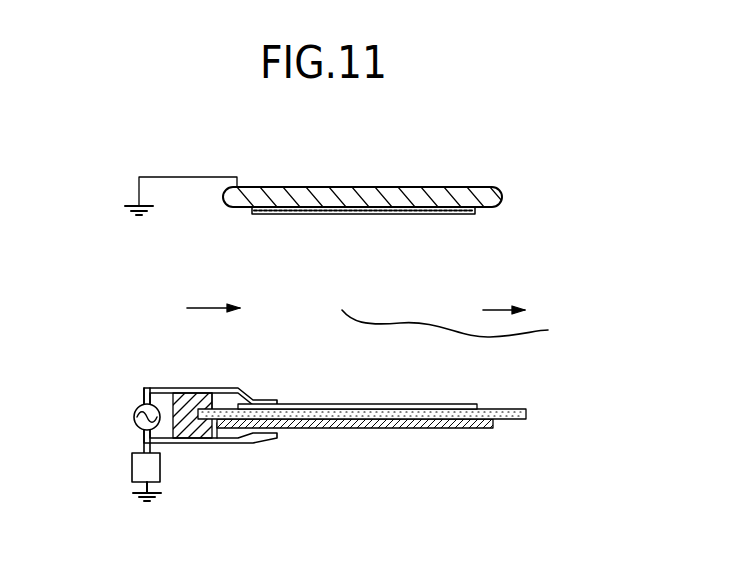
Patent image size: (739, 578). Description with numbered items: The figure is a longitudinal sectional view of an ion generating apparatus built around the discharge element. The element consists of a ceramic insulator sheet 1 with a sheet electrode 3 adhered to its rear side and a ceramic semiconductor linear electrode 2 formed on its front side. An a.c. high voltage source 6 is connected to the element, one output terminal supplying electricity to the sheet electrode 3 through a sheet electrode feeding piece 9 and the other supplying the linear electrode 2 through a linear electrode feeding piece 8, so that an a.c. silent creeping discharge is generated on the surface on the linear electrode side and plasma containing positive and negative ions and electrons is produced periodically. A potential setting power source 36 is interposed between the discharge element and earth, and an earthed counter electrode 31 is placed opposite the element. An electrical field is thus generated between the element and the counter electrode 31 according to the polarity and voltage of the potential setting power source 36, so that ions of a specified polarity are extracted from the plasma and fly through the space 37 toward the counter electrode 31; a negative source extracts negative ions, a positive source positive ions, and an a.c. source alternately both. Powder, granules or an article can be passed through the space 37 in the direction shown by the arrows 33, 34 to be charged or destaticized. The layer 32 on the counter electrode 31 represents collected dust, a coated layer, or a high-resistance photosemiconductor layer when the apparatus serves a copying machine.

The ceramic insulator sheet 1 is at (519, 409).
The ceramic semiconductor linear electrode 2 is at (461, 404).
The sheet electrode 3 is at (471, 429).
The a.c. high voltage source 6 is at (133, 418).
The linear electrode feeding piece 8 is at (178, 387).
The sheet electrode feeding piece 9 is at (211, 444).
The counter electrode 31 is at (497, 188).
The layer on the counter electrode 32 is at (467, 215).
The arrow 33 is at (203, 308).
The arrow 34 is at (497, 309).
The potential setting power source 36 is at (131, 467).
The space 37 is at (463, 331).